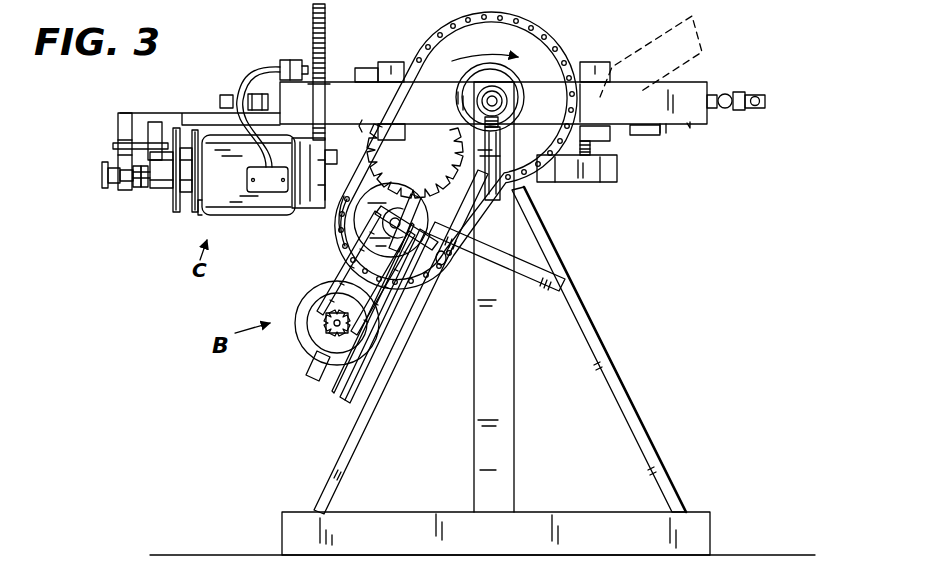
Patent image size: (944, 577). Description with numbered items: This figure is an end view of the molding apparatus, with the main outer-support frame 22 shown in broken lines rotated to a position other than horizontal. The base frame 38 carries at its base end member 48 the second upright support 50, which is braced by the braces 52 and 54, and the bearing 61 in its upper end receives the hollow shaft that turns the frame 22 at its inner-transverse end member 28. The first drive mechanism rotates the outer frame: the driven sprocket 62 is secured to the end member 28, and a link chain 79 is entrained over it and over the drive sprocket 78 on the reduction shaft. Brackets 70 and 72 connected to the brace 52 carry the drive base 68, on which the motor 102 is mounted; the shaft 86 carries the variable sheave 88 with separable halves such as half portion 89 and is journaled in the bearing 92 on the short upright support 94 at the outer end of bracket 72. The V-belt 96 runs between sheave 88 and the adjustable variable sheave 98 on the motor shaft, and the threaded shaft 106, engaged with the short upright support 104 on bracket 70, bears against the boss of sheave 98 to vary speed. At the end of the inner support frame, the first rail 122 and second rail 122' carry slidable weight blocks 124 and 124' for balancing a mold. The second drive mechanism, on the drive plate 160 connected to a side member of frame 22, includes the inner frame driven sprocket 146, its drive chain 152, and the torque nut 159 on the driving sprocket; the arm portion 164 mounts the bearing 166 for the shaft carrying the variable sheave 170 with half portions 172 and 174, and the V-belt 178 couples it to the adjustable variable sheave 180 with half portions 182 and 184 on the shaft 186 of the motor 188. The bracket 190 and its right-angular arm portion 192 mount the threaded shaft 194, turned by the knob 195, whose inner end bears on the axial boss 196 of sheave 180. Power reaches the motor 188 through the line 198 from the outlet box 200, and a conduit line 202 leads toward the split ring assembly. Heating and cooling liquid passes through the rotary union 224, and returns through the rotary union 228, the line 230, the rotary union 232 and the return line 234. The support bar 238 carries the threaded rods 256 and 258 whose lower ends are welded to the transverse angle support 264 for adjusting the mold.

The main outer-support frame 22 is at (697, 79).
The inner-transverse end member 28 is at (700, 28).
The base frame 38 is at (713, 516).
The base end member 48 is at (567, 512).
The second upright support 50 is at (513, 383).
The brace 52 is at (327, 485).
The brace 54 is at (667, 483).
The bearing 61 is at (512, 100).
The outer support frame driven sprocket 62 is at (535, 50).
The drive base 68 is at (410, 308).
The bracket 70 is at (387, 340).
The bracket 72 is at (440, 257).
The drive sprocket 78 is at (356, 228).
The link chain 79 is at (547, 165).
The shaft 86 is at (368, 244).
The variable sheave 88 is at (352, 238).
The half portion of variable sheave 89 is at (338, 220).
The bearing 92 is at (391, 220).
The short upright support 94 is at (463, 220).
The V-belt 96 is at (397, 313).
The adjustable variable sheave 98 is at (300, 334).
The motor 102 is at (298, 305).
The short upright support 104 is at (345, 377).
The threaded shaft 106 is at (322, 322).
The first rail member 122 is at (651, 56).
The second rail 122' is at (367, 112).
The weight blocks 124 is at (508, 48).
The weight blocks 124' is at (527, 139).
The inner support frame driven sprocket 146 is at (326, 26).
The drive chain 152 is at (328, 40).
The torque nut 159 is at (326, 143).
The drive plate 160 is at (294, 123).
The right-angular arm portion 164 is at (130, 125).
The bearing 166 is at (114, 147).
The variable sheave 170 is at (181, 128).
The half portion of variable sheave 172 is at (173, 135).
The half portion of variable sheave 174 is at (193, 128).
The V-belt 178 is at (203, 160).
The adjustable variable sheave 180 is at (173, 214).
The half portion of adjustable sheave 182 is at (162, 195).
The half portion of adjustable sheave 184 is at (207, 199).
The motor shaft 186 is at (203, 178).
The motor 188 is at (213, 217).
The transversely extending bracket 190 is at (147, 110).
The right-angular arm portion 192 is at (128, 125).
The threaded shaft 194 is at (138, 188).
The knob 195 is at (100, 175).
The axial boss 196 is at (148, 187).
The line 198 is at (244, 90).
The outlet box 200 is at (290, 60).
The conduit line 202 is at (342, 78).
The rotary union 224 is at (226, 95).
The rotary union 228 is at (767, 98).
The line 230 is at (735, 94).
The rotary union 232 is at (500, 82).
The return line 234 is at (501, 163).
The support bar 238 is at (664, 132).
The threaded rod 256 is at (414, 147).
The threaded rod 258 is at (613, 182).
The transverse angle support 264 is at (590, 182).